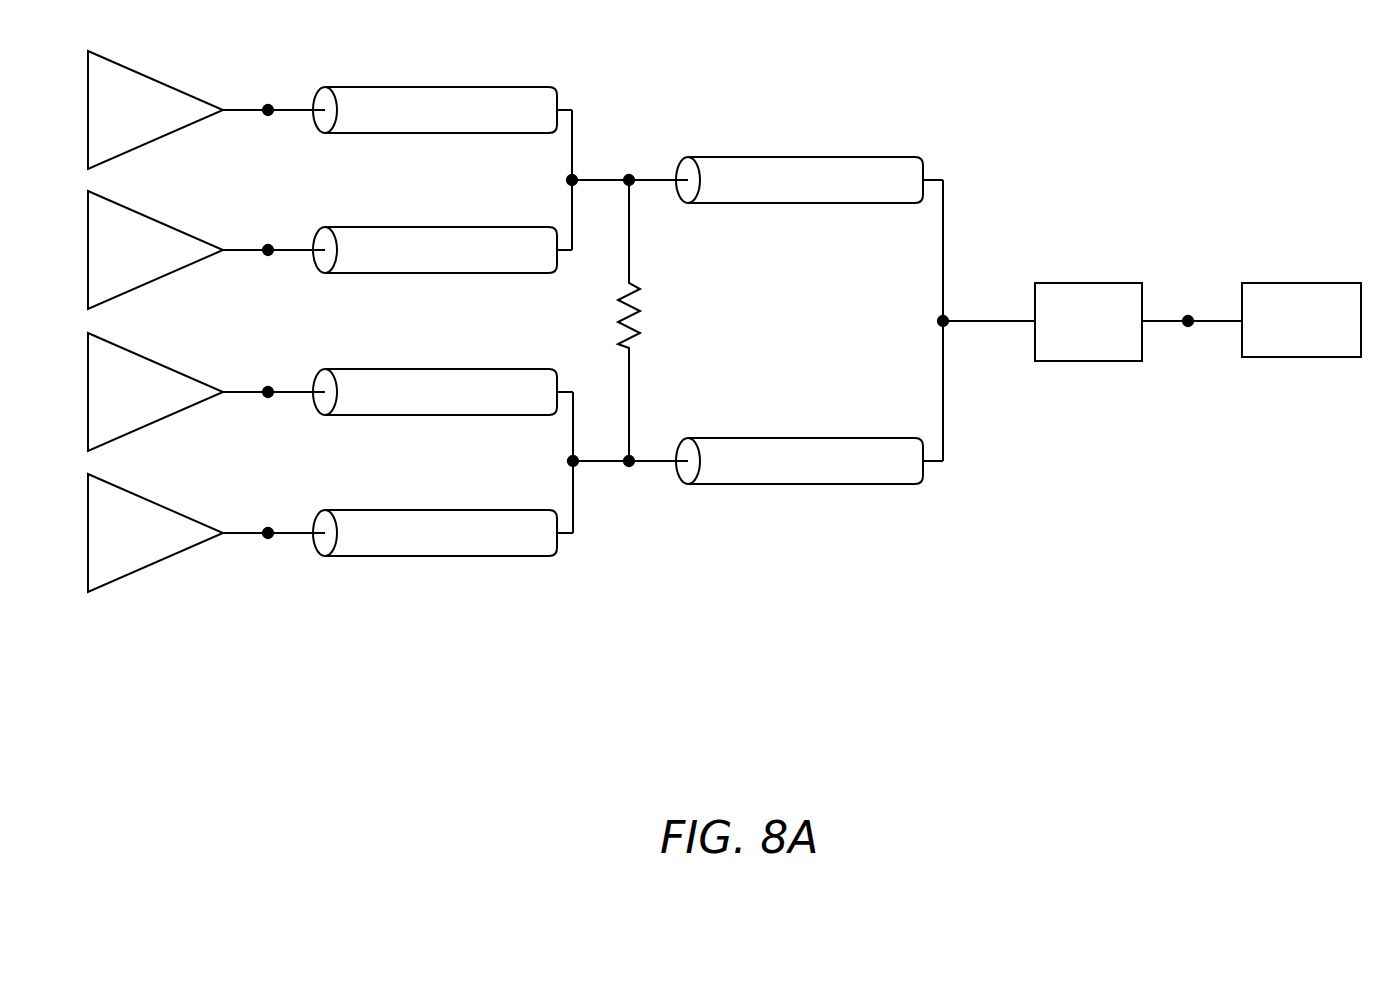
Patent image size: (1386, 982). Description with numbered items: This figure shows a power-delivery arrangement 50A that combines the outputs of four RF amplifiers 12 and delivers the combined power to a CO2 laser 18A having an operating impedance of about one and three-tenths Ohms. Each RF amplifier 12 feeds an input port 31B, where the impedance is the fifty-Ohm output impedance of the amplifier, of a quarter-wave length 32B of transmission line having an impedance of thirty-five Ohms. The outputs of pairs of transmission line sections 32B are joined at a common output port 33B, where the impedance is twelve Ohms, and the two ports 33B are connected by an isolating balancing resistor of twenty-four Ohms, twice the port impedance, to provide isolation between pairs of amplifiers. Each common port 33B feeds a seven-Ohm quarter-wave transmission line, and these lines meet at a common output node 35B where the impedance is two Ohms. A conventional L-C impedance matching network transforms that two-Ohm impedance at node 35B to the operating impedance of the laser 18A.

The RF amplifier 12 is at (142, 145).
The input port 31B is at (268, 114).
The quarter-wave length of transmission line section 32B is at (410, 133).
The common output port 33B is at (632, 183).
The common output port 35B is at (946, 324).
The laser 18A is at (1265, 357).
The power-delivery arrangement 50A is at (724, 368).